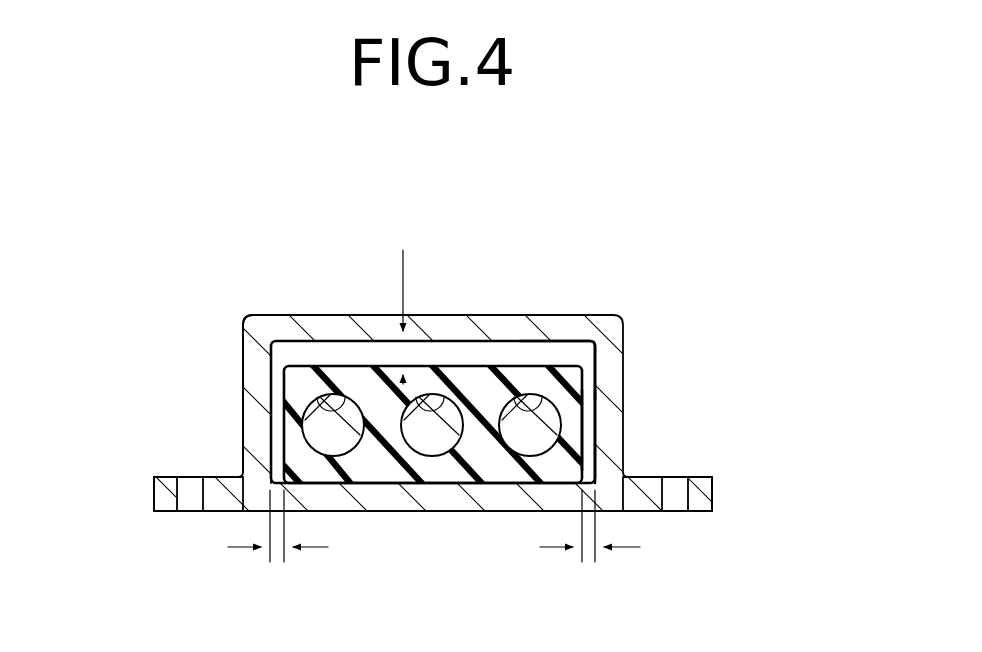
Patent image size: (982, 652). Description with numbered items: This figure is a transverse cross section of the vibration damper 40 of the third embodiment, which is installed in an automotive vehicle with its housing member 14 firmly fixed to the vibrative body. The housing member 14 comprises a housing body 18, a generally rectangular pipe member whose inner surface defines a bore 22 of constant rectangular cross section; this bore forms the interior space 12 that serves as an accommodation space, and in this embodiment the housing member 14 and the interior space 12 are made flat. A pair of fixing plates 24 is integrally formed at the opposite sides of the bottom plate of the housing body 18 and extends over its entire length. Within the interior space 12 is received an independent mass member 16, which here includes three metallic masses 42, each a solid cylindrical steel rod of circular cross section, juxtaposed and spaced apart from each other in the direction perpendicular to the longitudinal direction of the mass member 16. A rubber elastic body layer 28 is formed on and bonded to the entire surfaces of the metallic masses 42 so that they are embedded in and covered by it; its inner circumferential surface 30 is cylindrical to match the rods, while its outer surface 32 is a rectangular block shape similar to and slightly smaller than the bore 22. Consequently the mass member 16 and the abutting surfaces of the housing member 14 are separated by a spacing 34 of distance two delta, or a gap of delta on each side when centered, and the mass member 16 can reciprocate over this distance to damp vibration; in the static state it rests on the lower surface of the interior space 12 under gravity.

The interior space 12 is at (560, 355).
The housing member 14 is at (237, 289).
The independent mass member 16 is at (329, 358).
The housing body 18 is at (257, 410).
The bore 22 is at (597, 368).
The fixing plates 24 is at (163, 497).
The rubber elastic body layer 28 is at (293, 435).
The inner circumferential surface 30 is at (343, 393).
The outer surface 32 is at (285, 385).
The spacing 34 is at (588, 412).
The vibration damper 40 is at (556, 213).
The metallic masses 42 is at (332, 430).